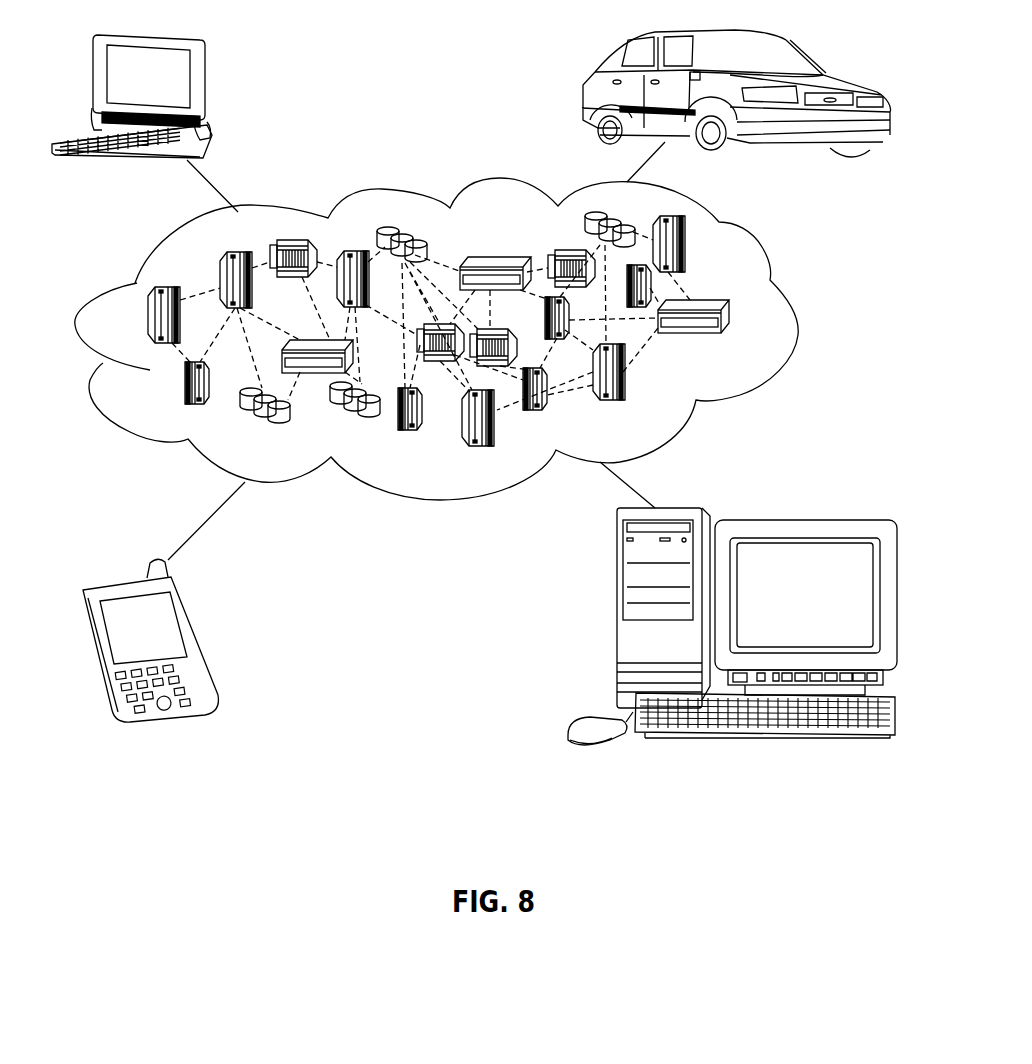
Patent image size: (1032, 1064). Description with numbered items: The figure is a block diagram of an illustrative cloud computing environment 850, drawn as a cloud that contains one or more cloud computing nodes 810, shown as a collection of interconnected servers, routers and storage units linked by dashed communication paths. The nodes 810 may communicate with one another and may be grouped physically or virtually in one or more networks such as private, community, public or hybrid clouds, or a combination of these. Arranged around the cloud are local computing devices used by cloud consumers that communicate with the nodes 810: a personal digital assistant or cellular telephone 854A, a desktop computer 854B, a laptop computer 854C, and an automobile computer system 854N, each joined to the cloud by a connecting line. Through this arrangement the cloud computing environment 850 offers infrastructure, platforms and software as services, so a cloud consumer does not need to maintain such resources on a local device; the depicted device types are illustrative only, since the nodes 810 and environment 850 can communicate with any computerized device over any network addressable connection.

The cloud computing nodes 810 is at (745, 337).
The cloud computing environment 850 is at (770, 280).
The personal digital assistant (PDA) or cellular telephone 854A is at (202, 637).
The desktop computer 854B is at (617, 615).
The laptop computer 854C is at (205, 82).
The automobile computer system 854N is at (588, 86).